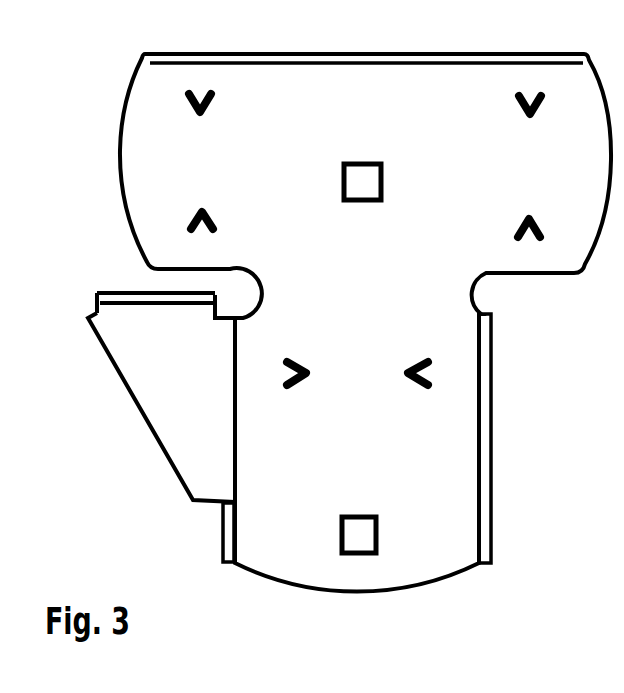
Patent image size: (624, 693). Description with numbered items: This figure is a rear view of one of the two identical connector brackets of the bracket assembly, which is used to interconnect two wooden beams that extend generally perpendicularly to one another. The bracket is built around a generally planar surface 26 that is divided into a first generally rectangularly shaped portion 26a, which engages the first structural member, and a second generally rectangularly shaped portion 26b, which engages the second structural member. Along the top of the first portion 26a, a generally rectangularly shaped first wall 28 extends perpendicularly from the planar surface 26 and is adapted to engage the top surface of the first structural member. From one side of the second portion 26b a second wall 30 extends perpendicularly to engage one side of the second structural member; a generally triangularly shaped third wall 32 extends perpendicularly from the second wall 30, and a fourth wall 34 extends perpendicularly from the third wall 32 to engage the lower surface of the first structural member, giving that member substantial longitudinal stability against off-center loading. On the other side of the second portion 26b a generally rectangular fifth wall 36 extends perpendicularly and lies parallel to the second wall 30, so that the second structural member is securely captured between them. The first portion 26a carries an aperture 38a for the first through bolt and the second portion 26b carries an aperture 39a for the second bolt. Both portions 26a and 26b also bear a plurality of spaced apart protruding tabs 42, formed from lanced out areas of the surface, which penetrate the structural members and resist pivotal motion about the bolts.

The generally planar surface 26 is at (388, 283).
The first generally rectangularly shaped portion 26a is at (427, 114).
The second generally rectangularly shaped portion 26b is at (400, 444).
The first wall 28 is at (430, 58).
The second wall 30 is at (222, 532).
The third wall 32 is at (145, 387).
The fourth wall 34 is at (128, 292).
The fifth wall 36 is at (492, 478).
The aperture 38a is at (372, 180).
The aperture 39a is at (363, 533).
The protruding tabs 42 is at (205, 115).